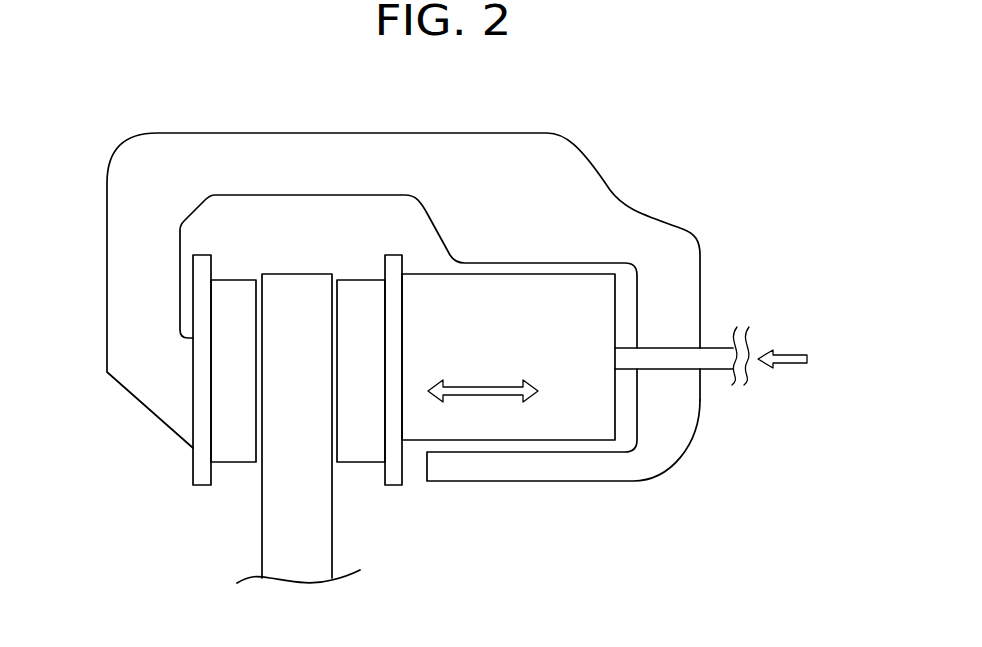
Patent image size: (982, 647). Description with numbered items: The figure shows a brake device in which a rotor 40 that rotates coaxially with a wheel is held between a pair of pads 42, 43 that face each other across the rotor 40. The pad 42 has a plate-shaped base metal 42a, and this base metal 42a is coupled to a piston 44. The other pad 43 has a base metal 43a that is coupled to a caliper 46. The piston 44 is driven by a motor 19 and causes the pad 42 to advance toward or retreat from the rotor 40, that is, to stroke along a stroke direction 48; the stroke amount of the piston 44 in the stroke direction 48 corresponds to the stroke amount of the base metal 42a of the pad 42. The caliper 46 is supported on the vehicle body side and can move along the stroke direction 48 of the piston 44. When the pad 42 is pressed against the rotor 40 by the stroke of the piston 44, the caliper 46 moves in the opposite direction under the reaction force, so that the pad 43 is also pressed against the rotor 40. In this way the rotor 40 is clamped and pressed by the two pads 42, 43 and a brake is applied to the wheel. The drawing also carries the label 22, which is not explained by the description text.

The motor 19 is at (800, 359).
The actuator assembly 22 is at (539, 483).
The rotor 40 is at (297, 302).
The pad 42 is at (357, 302).
The base metal 42a is at (393, 302).
The pad 43 is at (235, 302).
The base metal 43a is at (202, 395).
The piston 44 is at (563, 305).
The caliper 46 is at (522, 167).
The stroke direction 48 is at (486, 386).